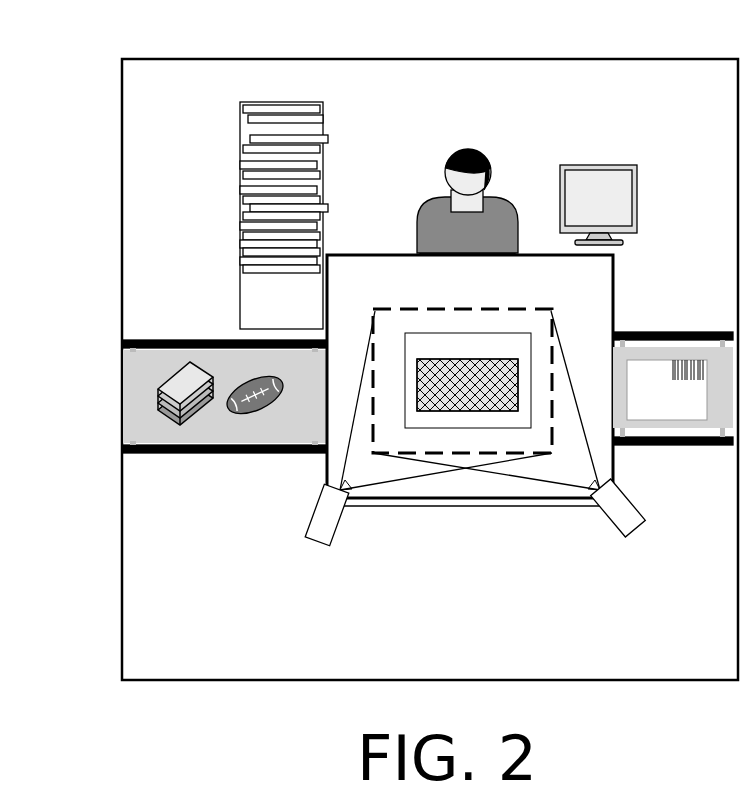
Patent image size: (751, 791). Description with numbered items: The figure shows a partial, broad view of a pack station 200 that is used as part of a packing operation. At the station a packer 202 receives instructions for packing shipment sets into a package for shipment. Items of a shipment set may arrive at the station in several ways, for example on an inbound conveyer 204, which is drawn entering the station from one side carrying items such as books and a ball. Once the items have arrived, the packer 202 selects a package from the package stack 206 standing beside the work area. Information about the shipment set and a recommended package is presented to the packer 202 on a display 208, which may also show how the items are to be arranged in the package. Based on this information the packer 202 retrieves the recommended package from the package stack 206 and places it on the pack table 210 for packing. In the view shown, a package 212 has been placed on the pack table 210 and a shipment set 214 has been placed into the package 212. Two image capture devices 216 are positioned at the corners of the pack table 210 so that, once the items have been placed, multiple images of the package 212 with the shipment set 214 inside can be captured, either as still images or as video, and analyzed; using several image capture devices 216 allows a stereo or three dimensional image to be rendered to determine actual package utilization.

The pack station 200 is at (430, 369).
The packer 202 is at (468, 150).
The inbound conveyer 204 is at (121, 410).
The package stack 206 is at (291, 102).
The display 208 is at (593, 165).
The pack table 210 is at (613, 293).
The package 212 is at (417, 333).
The shipment set 214 is at (483, 360).
The image capture devices 216 is at (320, 535).